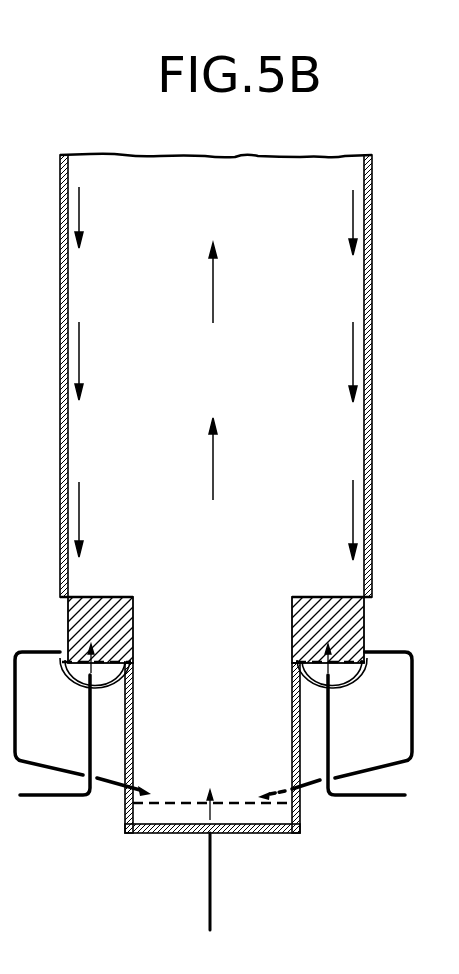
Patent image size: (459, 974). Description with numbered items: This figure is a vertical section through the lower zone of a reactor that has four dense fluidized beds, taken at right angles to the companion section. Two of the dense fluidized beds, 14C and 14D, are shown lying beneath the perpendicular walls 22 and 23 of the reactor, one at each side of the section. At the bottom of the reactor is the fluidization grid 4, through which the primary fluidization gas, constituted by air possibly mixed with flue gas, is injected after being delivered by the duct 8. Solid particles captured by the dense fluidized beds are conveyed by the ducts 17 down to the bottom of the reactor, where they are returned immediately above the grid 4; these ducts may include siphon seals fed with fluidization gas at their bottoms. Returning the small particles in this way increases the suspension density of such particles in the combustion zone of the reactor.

The wall 22 is at (60, 320).
The wall 23 is at (372, 330).
The dense fluidized bed 14C is at (88, 623).
The dense fluidized bed 14D is at (340, 628).
The ducts 17 is at (18, 716).
The fluidization grid 4 is at (153, 802).
The duct 8 is at (210, 893).